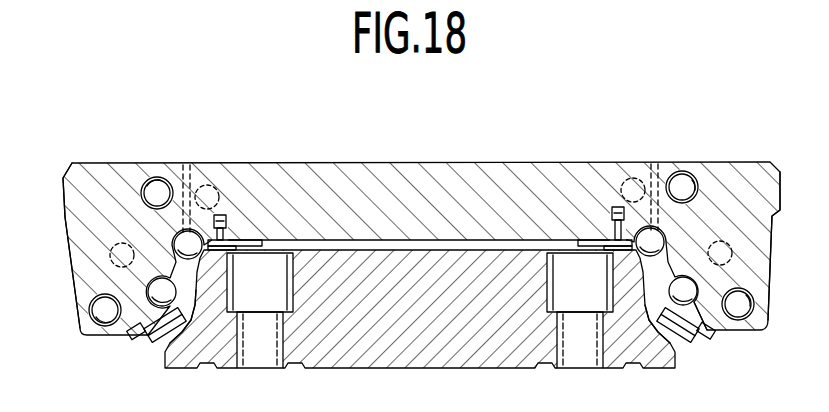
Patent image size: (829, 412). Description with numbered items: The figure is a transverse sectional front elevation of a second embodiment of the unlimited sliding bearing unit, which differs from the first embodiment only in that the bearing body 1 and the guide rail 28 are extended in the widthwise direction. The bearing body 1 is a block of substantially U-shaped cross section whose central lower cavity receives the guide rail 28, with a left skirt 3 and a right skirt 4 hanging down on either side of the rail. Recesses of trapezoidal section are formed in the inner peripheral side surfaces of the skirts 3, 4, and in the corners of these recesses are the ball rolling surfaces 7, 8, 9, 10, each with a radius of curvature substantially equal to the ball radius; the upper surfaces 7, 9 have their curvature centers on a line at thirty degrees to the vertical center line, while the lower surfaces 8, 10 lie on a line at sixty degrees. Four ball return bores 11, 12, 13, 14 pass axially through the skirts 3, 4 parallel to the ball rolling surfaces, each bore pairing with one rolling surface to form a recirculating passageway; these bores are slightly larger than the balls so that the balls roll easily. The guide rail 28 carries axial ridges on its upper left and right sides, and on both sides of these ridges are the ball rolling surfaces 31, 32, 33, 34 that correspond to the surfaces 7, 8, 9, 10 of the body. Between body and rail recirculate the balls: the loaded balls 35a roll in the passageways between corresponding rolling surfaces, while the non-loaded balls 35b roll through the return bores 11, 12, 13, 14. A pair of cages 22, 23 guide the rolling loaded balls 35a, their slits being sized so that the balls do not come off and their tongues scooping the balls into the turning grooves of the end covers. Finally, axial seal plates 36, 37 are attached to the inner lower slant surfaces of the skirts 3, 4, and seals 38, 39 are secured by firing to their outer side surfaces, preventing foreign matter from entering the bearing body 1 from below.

The bearing body 1 is at (747, 156).
The left skirt 3 is at (90, 276).
The right skirt 4 is at (742, 264).
The upper ball rolling surface 7 is at (191, 236).
The lower ball rolling surface 8 is at (150, 330).
The upper ball rolling surface 9 is at (656, 244).
The lower ball rolling surface 10 is at (720, 290).
The ball return bore 11 is at (150, 185).
The ball return bore 12 is at (95, 331).
The ball return bore 13 is at (690, 182).
The ball return bore 14 is at (756, 296).
The cage 22 is at (112, 256).
The cage 23 is at (734, 247).
The guide rail 28 is at (218, 350).
The ball rolling surface 31 is at (226, 217).
The ball rolling surface 32 is at (183, 367).
The ball rolling surface 33 is at (636, 222).
The ball rolling surface 34 is at (644, 338).
The loaded ball 35a is at (192, 228).
The non-loaded ball 35b is at (158, 190).
The axial seal plate 36 is at (193, 302).
The axial seal plate 37 is at (668, 322).
The seal 38 is at (170, 340).
The seal 39 is at (660, 338).